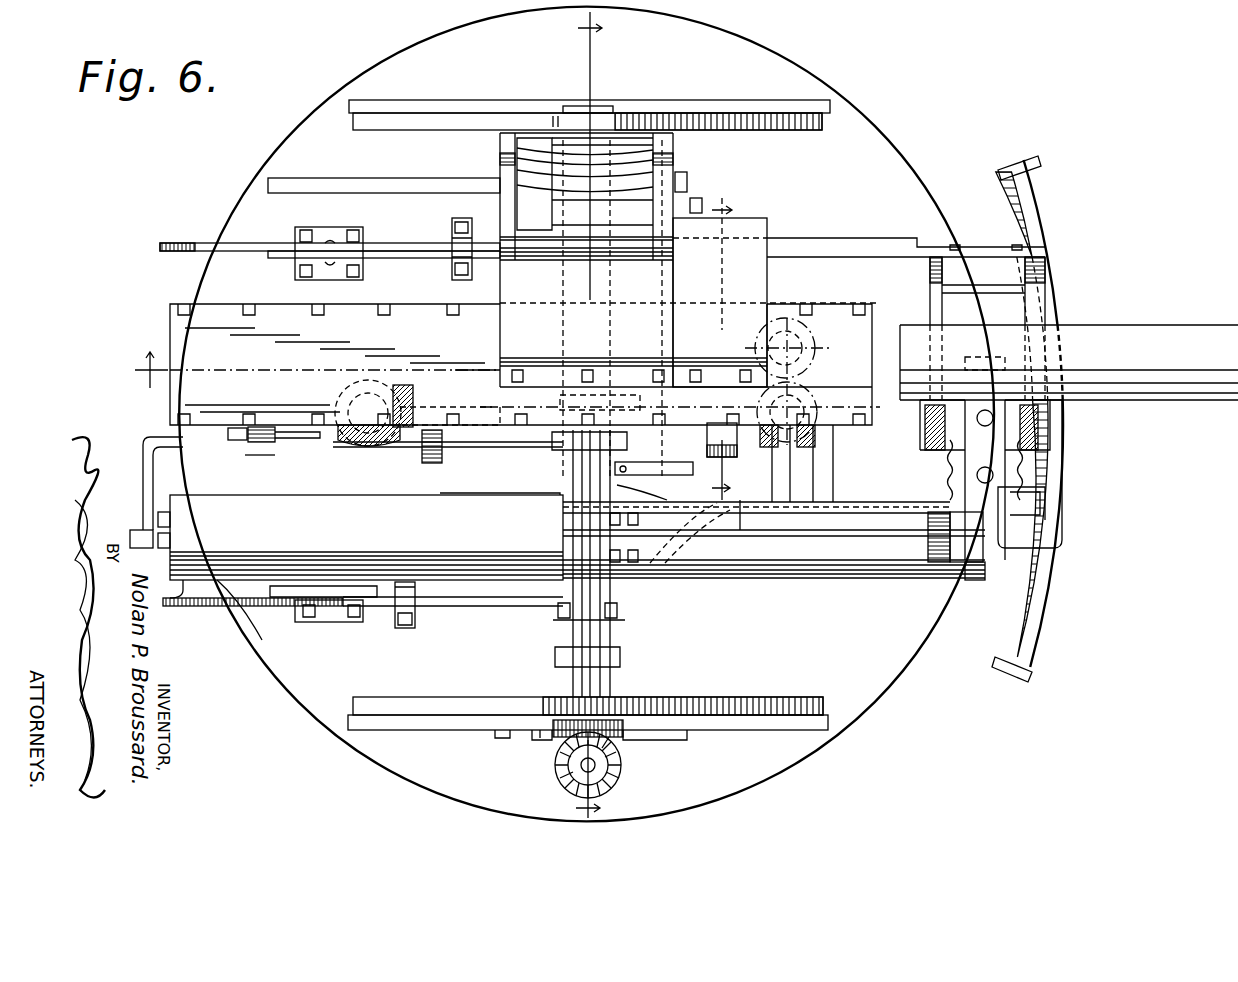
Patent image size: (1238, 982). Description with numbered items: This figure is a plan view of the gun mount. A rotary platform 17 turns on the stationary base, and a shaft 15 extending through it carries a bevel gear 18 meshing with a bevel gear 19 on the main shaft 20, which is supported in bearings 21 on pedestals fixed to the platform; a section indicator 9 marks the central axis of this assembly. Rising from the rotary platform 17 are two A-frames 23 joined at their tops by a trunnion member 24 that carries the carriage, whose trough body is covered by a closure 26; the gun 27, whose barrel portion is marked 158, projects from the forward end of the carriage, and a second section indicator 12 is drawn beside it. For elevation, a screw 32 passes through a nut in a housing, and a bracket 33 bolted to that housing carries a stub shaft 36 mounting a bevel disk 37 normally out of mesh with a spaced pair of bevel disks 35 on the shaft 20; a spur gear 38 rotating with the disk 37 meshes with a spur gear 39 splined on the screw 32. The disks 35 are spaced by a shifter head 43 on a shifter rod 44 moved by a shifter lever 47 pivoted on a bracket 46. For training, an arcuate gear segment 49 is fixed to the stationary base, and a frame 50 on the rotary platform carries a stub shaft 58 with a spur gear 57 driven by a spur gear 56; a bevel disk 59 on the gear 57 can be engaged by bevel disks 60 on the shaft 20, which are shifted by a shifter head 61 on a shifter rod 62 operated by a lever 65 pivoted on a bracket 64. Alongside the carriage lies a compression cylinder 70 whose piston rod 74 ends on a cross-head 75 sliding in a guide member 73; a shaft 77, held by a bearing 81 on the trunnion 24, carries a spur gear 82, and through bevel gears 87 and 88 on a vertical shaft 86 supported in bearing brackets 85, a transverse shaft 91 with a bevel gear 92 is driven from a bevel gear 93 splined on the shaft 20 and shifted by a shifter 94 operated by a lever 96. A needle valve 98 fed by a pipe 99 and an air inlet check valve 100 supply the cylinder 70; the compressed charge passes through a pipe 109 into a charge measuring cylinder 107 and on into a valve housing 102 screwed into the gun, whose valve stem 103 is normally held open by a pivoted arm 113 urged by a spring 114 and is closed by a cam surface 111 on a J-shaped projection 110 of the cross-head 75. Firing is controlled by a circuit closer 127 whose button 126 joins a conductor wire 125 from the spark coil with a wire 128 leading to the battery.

The section line 9- 9 is at (577, 414).
The section line 12- 12 is at (719, 341).
The shaft 15 is at (335, 402).
The rotary platform 17 is at (786, 80).
The bevel gear 18 is at (336, 440).
The bevel gear 19 is at (420, 393).
The main shaft 20 is at (478, 410).
The bearings 21 is at (504, 379).
The A-frames 23 is at (763, 120).
The trunnion member 24 is at (575, 104).
The closure 26 is at (276, 312).
The gun 27 is at (1118, 327).
The screw 32 is at (805, 352).
The bracket 33 is at (825, 492).
The bevel disks 35 is at (845, 432).
The stub shaft 36 is at (855, 388).
The bevel disk 37 is at (815, 478).
The spur gear 38 is at (815, 455).
The spur gear 39 is at (805, 342).
The shifter head 43 is at (755, 492).
The shifter rod 44 is at (535, 606).
The bracket 46 is at (338, 624).
The shifter lever 47 is at (262, 640).
The arcuate gear segment 49 is at (1065, 428).
The frame 50 is at (1040, 390).
The spur gear 56 is at (1045, 513).
The spur gear 57 is at (952, 428).
The stub shaft 58 is at (983, 410).
The bevel disk 59 is at (1040, 437).
The bevel disks 60 is at (933, 475).
The shifter head 61 is at (1010, 272).
The shifter rod 62 is at (432, 250).
The bracket 64 is at (330, 270).
The lever 65 is at (254, 243).
The compression cylinder 70 is at (490, 606).
The guide member 73 is at (828, 566).
The piston rod 74 is at (900, 538).
The cross-head 75 is at (938, 560).
The shaft 77 is at (592, 682).
The bearing 81 is at (612, 630).
The spur gear 82 is at (565, 718).
The bearing brackets 85 is at (650, 740).
The vertical shaft 86 is at (580, 768).
The bevel gear 87 is at (625, 732).
The bevel gear 88 is at (615, 785).
The transverse shaft 91 is at (492, 505).
The bevel gear 92 is at (555, 468).
The bevel gear 93 is at (620, 400).
The shifter 94 is at (655, 352).
The lever 96 is at (436, 191).
The needle valve 98 is at (172, 540).
The pipe 99 is at (138, 530).
The air inlet check valve 100 is at (192, 607).
The valve housing 102 is at (708, 422).
The valve stem 103 is at (732, 492).
The charge measuring cylinder 107 is at (475, 450).
The pipe 109 is at (392, 452).
The J-shaped projection 110 is at (1047, 558).
The cam surface 111 is at (981, 585).
The pivoted arm 113 is at (677, 482).
The spring 114 is at (565, 522).
The conductor wire 125 is at (320, 427).
The button 126 is at (323, 442).
The circuit closer 127 is at (262, 457).
The wire 128 is at (232, 430).
The bar 158 is at (1187, 385).